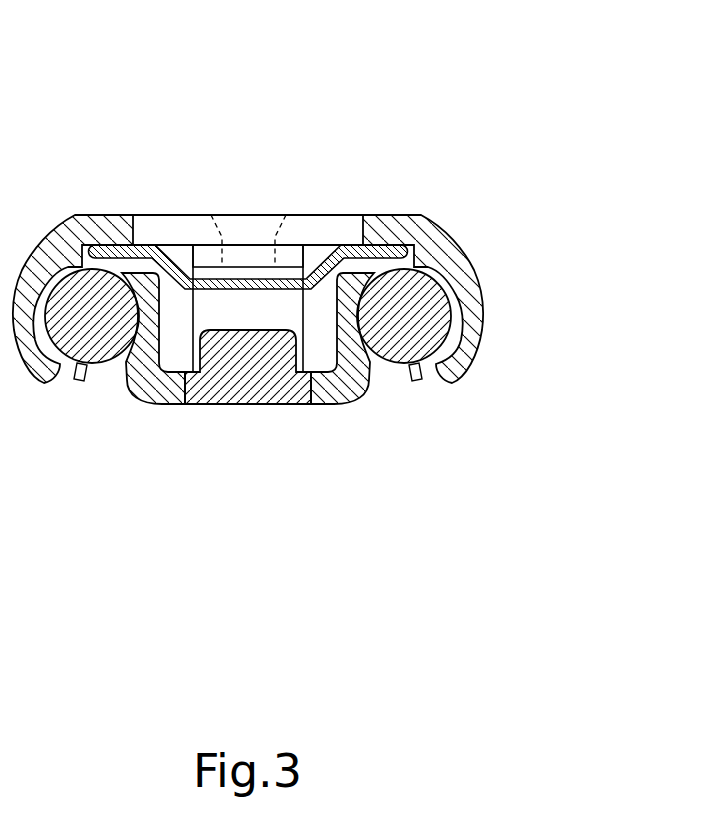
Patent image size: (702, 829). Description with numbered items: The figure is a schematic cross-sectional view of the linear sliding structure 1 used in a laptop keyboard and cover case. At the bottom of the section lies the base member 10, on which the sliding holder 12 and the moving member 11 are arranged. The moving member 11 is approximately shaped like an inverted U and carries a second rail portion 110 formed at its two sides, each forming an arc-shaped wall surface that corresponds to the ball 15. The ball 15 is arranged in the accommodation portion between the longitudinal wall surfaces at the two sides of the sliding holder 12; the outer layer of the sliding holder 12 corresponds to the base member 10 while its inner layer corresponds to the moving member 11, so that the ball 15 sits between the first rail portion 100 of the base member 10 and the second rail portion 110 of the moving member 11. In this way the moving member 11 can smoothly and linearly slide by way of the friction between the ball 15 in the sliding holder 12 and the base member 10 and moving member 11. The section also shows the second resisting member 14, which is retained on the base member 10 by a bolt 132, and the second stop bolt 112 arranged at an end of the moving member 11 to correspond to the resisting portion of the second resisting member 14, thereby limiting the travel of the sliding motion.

The linear sliding structure 1 is at (423, 73).
The base member 10 is at (450, 230).
The first rail portion 100 is at (455, 335).
The moving member 11 is at (323, 405).
The second rail portion 110 is at (120, 360).
The second stop bolt 112 is at (203, 403).
The sliding holder 12 is at (152, 243).
The bolt 132 is at (238, 218).
The second resisting member 14 is at (207, 252).
The ball 15 is at (392, 363).